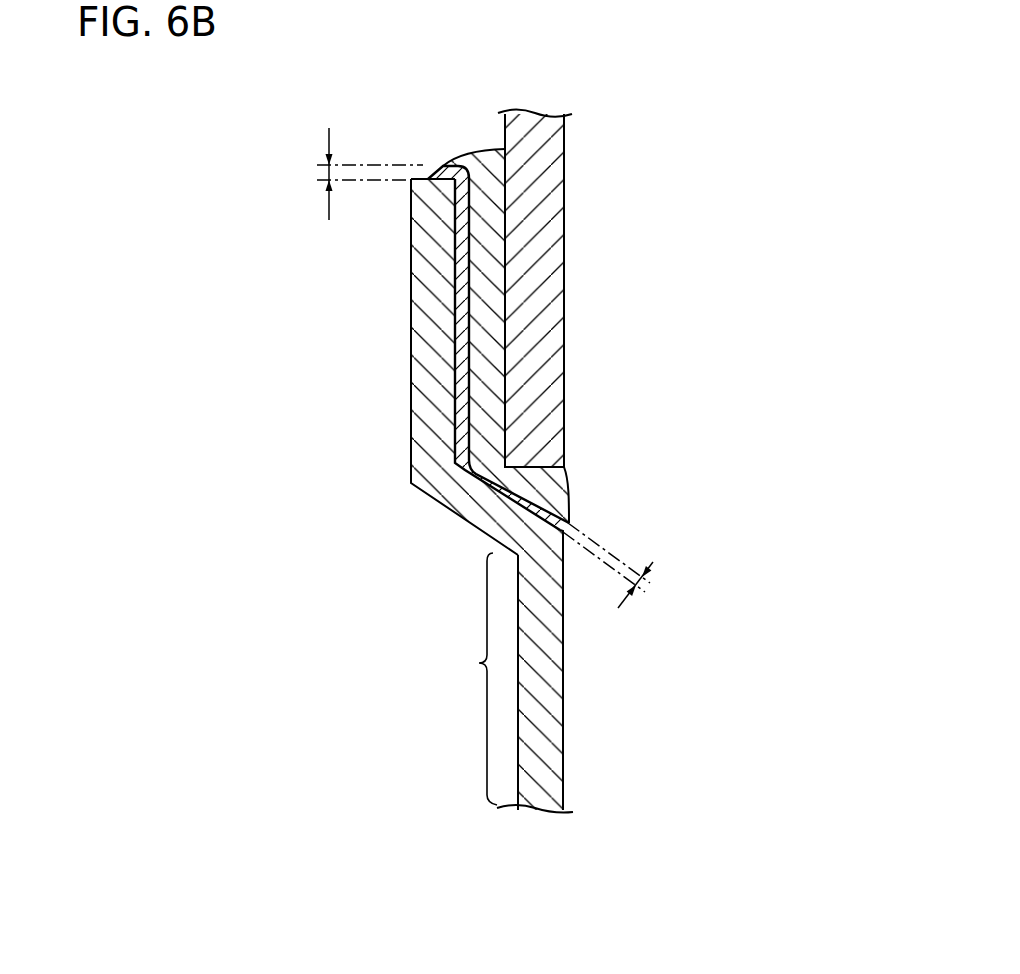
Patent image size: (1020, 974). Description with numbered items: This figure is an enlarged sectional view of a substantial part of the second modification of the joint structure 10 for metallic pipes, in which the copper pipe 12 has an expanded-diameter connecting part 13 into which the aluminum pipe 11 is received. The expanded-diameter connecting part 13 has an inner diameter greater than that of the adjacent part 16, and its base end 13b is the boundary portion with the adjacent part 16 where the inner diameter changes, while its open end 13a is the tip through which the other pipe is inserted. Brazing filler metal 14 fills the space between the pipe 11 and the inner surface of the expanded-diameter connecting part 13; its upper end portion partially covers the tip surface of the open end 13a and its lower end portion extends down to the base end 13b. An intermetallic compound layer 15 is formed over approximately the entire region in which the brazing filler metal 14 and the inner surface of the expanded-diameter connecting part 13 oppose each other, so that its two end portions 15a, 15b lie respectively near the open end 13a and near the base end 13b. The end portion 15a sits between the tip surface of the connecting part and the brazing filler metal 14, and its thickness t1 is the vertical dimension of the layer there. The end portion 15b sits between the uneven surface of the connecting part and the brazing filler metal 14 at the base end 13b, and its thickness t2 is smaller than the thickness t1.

The joint structure 10 is at (343, 107).
The aluminum pipe 11 is at (572, 176).
The copper pipe 12 is at (572, 717).
The expanded-diameter connecting part 13 is at (420, 350).
The open end 13a is at (419, 160).
The base end 13b is at (578, 522).
The brazing filler metal 14 is at (487, 360).
The intermetallic compound layer 15 is at (450, 302).
The end portion of the intermetallic compound layer on the open end side 15a is at (440, 148).
The end portion of the intermetallic compound layer on the base end side 15b is at (573, 558).
The adjacent part 16 is at (472, 679).
The thickness of the end portion on the open end side t1 is at (353, 174).
The thickness of the end portion on the base end side t2 is at (620, 568).